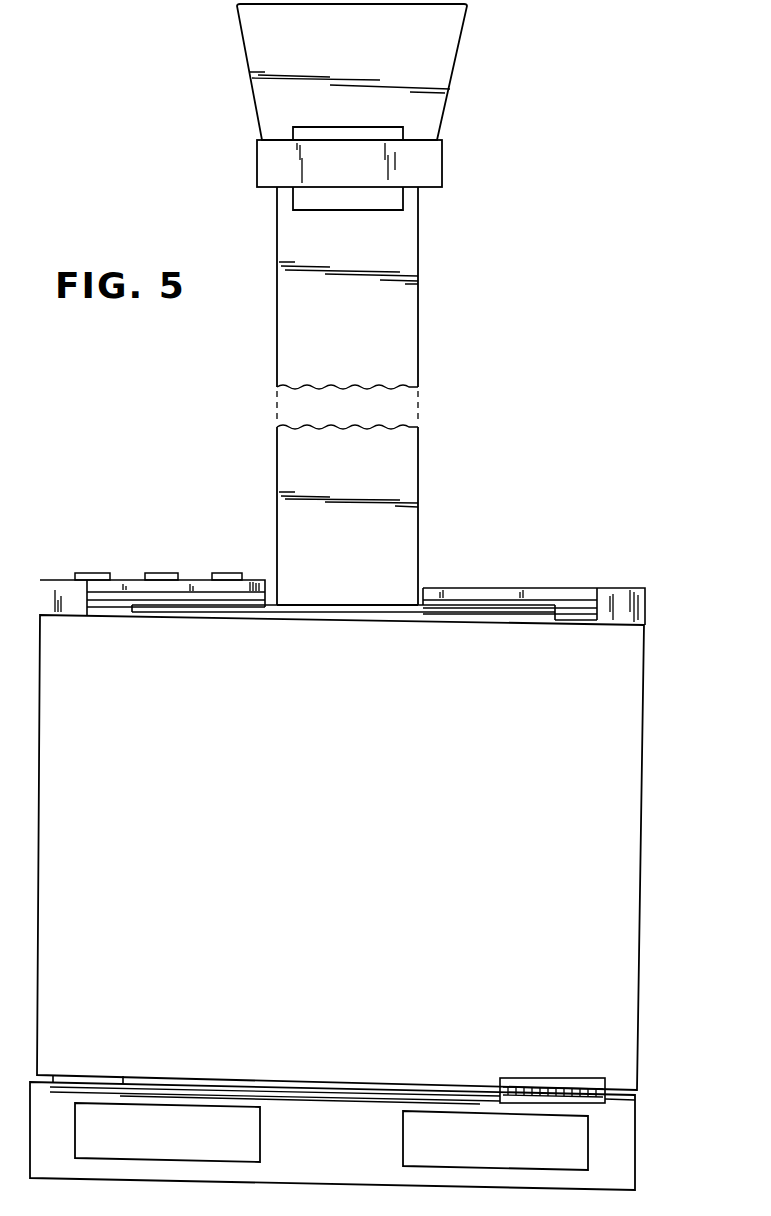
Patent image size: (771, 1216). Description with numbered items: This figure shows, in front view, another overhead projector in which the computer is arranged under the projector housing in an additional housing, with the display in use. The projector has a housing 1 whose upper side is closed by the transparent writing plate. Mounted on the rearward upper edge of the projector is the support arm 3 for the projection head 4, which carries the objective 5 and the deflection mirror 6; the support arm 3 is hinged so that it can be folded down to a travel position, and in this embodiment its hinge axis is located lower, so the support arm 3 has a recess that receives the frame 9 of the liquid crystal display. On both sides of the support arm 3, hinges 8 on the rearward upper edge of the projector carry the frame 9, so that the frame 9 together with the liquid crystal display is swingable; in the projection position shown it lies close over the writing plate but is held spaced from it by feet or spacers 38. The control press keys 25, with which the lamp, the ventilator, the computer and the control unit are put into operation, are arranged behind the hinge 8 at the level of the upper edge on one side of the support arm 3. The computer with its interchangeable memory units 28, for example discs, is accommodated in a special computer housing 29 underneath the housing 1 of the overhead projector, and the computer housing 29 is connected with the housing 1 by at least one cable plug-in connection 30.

The housing 1 is at (590, 690).
The support arm 3 is at (395, 320).
The projection head 4 is at (425, 170).
The objective 5 is at (380, 133).
The deflection mirror 6 is at (405, 65).
The hinges 8 is at (228, 600).
The frame 9 is at (510, 615).
The control press keys 25 is at (212, 578).
The interchangeable memory units 28 is at (567, 1130).
The computer housing 29 is at (618, 1146).
The cable plug-in connection 30 is at (613, 1089).
The spacers 38 is at (570, 620).